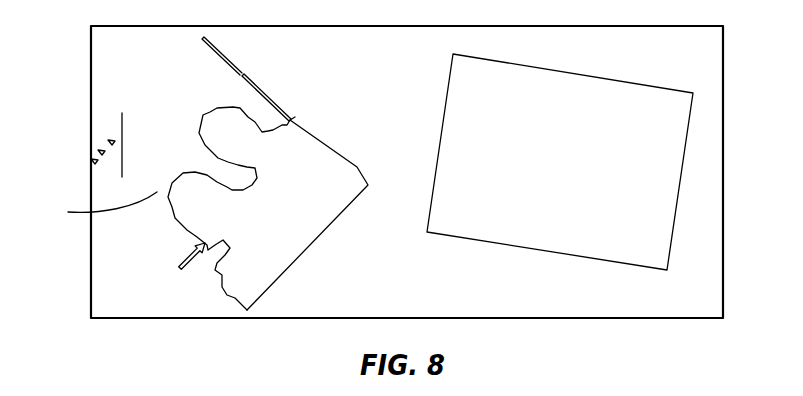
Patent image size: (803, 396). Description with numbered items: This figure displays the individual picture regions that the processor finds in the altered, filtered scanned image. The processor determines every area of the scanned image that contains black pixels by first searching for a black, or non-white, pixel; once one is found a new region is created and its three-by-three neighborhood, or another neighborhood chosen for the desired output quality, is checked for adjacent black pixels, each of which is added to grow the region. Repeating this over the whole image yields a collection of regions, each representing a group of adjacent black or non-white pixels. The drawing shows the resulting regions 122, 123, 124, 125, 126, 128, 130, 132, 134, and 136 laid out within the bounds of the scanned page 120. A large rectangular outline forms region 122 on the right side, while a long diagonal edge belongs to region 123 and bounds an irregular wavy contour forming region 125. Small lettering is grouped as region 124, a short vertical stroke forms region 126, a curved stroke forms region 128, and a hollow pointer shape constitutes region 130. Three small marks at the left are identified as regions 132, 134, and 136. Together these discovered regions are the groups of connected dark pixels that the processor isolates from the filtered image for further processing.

The display page / document frame 120 is at (716, 194).
The region 122 is at (553, 68).
The region 123 is at (327, 228).
The region 124 is at (168, 142).
The region 125 is at (140, 156).
The region 126 is at (118, 134).
The region 128 is at (93, 209).
The region 130 is at (168, 269).
The region 132 is at (111, 143).
The region 134 is at (101, 153).
The region 136 is at (94, 162).